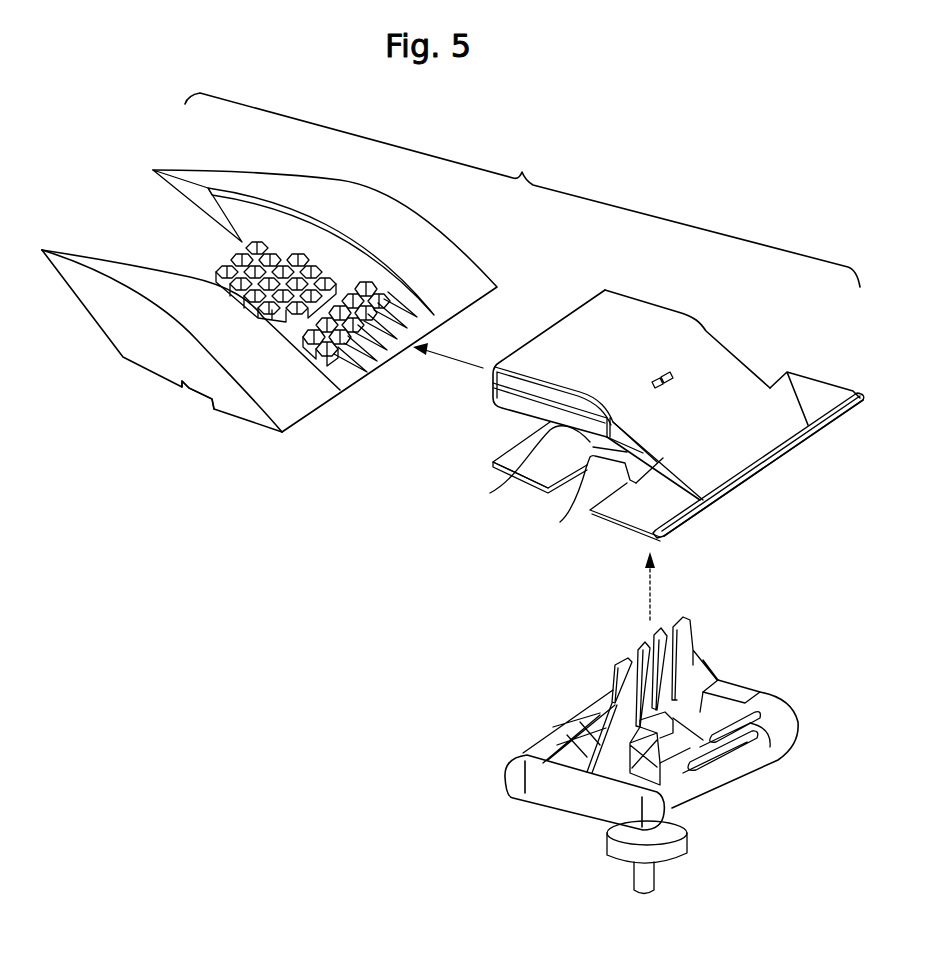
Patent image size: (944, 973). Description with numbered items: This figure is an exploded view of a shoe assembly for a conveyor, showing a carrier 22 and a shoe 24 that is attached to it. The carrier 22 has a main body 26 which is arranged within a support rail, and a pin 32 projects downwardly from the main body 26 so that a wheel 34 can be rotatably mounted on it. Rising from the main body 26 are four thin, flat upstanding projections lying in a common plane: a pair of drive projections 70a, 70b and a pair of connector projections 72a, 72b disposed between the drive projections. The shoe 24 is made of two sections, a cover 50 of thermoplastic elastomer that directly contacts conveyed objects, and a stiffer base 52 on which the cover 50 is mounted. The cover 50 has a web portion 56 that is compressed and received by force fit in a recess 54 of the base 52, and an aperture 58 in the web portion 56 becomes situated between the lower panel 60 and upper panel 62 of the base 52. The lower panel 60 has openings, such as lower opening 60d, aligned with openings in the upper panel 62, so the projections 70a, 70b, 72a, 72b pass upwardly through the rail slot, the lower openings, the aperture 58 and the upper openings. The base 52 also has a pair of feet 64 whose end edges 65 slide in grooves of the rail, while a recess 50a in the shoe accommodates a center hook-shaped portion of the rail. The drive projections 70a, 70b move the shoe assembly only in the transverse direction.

The carrier 22 is at (612, 757).
The shoe 24 is at (522, 190).
The main body 26 is at (567, 798).
The pin 32 is at (635, 882).
The wheel 34 is at (680, 845).
The cover 50 is at (183, 406).
The recess 50a is at (212, 404).
The base 52 is at (512, 505).
The recess 54 is at (488, 424).
The web portion 56 is at (217, 255).
The aperture 58 is at (300, 318).
The lower panel 60 is at (597, 455).
The lower opening 60d is at (634, 449).
The upper panel 62 is at (490, 493).
The feet 64 is at (812, 388).
The end edges 65 is at (855, 414).
The drive projection 70a is at (622, 677).
The drive projection 70b is at (688, 632).
The connector projection 72a is at (646, 646).
The connector projection 72b is at (659, 628).